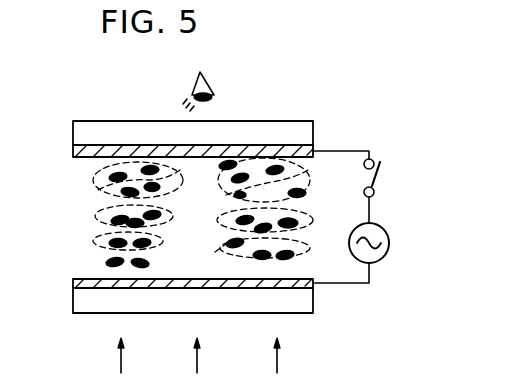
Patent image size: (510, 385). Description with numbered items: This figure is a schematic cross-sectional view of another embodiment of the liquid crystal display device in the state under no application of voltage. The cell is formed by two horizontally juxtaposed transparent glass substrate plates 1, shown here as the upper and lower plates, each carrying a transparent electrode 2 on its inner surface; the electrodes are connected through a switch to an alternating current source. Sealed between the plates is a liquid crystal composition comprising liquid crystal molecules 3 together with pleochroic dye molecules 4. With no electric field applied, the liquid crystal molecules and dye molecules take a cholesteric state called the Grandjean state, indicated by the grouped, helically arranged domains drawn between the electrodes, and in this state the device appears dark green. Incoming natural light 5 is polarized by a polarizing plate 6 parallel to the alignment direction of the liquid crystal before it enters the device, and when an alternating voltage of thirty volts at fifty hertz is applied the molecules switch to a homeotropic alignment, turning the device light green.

The transparent glass substrate plate 1 is at (212, 90).
The transparent electrode 2 is at (73, 130).
The liquid crystal molecules 3 is at (73, 152).
The pleochroic dye molecules 4 is at (93, 200).
The incoming natural light 5 is at (165, 165).
The polarizing plate 6 is at (283, 358).